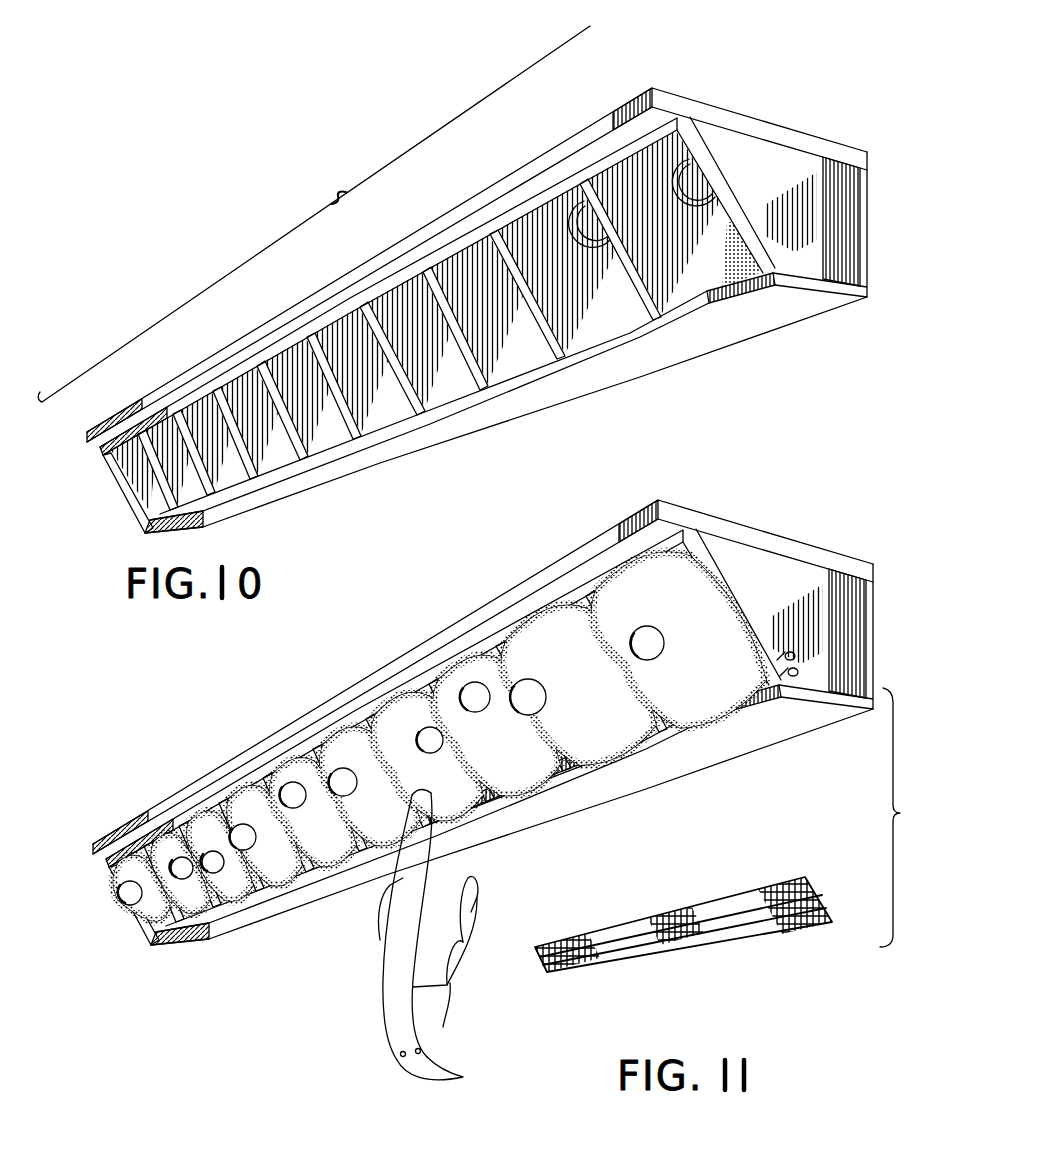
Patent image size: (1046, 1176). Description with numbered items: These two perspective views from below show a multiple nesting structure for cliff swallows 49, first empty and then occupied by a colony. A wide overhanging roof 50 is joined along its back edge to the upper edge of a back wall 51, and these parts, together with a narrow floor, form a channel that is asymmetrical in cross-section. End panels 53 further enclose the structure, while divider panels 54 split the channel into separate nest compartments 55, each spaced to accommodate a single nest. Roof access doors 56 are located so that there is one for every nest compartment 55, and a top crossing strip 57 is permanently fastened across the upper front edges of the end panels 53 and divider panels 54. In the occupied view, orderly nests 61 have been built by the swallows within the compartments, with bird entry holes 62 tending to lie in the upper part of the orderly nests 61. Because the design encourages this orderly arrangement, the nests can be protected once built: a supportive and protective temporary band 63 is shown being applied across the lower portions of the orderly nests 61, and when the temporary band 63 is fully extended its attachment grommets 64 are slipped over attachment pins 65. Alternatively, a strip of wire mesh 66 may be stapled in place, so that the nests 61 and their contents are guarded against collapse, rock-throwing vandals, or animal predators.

In FIG. 10, the multiple nesting structure for cliff swallows 49 is at (314, 214).
In FIG. 10, the wide overhanging roof 50 is at (783, 137).
In FIG. 10, the back wall 51 is at (860, 218).
In FIG. 10, the end panels 53 is at (142, 511).
In FIG. 10, the divider panels 54 is at (433, 385).
In FIG. 10, the nest compartments 55 is at (686, 280).
In FIG. 10, the roof access doors 56 is at (684, 172).
In FIG. 10, the top crossing strip 57 is at (410, 282).
In FIG. 11, the orderly nests 61 is at (593, 723).
In FIG. 11, the bird entry holes 62 is at (633, 630).
In FIG. 11, the temporary band 63 is at (273, 875).
In FIG. 11, the attachment grommets 64 is at (434, 934).
In FIG. 11, the attachment pins 65 is at (792, 652).
In FIG. 11, the strip of wire mesh 66 is at (748, 943).